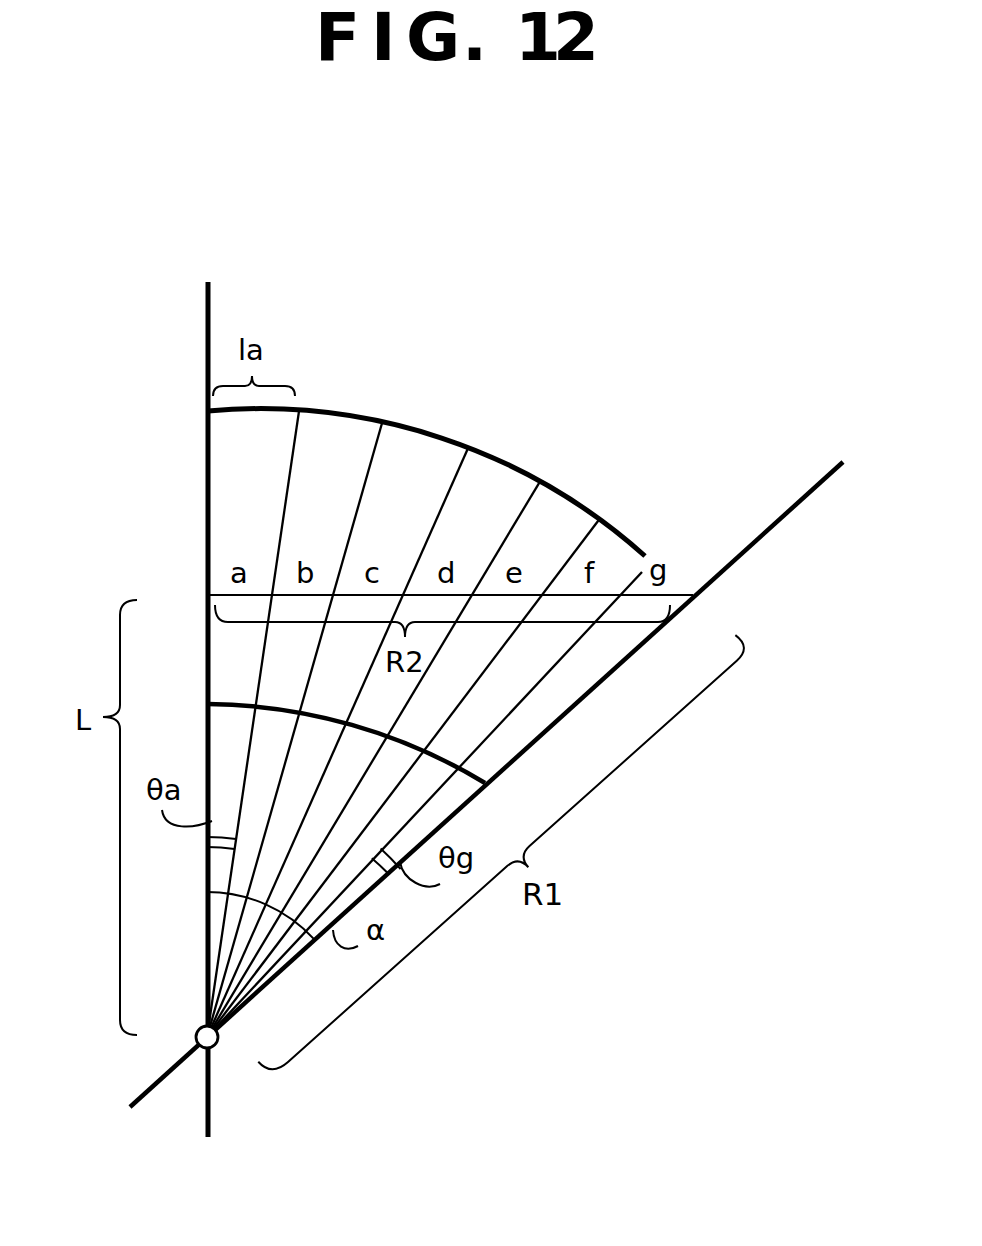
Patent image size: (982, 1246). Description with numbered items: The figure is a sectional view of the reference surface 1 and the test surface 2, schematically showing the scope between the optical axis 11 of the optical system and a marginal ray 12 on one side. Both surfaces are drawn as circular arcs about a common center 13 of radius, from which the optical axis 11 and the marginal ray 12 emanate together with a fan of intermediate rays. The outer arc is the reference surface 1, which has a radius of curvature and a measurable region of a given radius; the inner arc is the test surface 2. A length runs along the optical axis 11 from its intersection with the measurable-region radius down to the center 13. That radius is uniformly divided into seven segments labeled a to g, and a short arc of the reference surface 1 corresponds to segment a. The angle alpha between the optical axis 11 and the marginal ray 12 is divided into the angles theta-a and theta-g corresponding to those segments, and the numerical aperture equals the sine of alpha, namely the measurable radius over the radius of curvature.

The reference surface 1 is at (431, 430).
The test surface 2 is at (224, 704).
The optical axis 11 is at (208, 300).
The marginal ray 12 is at (827, 472).
The center of radius 13 is at (219, 1046).